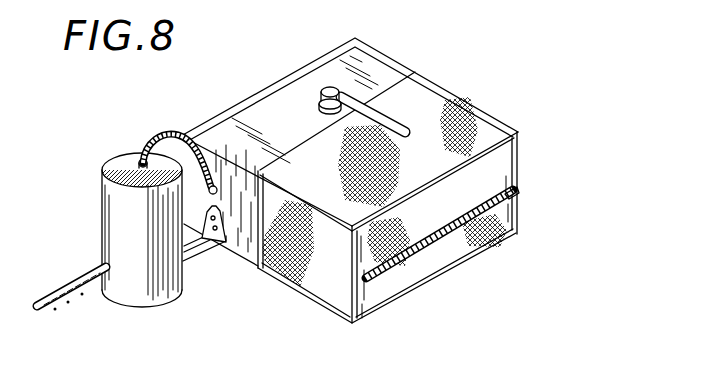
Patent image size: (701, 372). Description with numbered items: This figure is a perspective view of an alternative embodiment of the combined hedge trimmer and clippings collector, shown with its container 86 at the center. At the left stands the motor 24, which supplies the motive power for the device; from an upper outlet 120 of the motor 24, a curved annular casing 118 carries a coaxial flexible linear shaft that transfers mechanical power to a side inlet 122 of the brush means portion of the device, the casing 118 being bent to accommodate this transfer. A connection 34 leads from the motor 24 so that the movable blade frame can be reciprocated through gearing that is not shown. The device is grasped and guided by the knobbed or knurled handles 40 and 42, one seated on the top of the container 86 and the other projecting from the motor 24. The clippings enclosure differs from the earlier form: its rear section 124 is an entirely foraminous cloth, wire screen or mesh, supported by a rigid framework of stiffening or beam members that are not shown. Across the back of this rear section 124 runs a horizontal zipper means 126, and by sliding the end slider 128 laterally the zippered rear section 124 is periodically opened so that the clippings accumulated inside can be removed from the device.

The lid 86 is at (368, 50).
The foraminous rear section 124 is at (483, 128).
The side inlet 122 is at (206, 136).
The knobbed handle 40 is at (388, 113).
The horizontal zipper means 126 is at (423, 247).
The end slider 128 is at (516, 192).
The motor 24 is at (110, 204).
The upper outlet 120 is at (124, 153).
The annular casing 118 is at (160, 134).
The knobbed handle 42 is at (63, 285).
The connection 34 is at (200, 254).